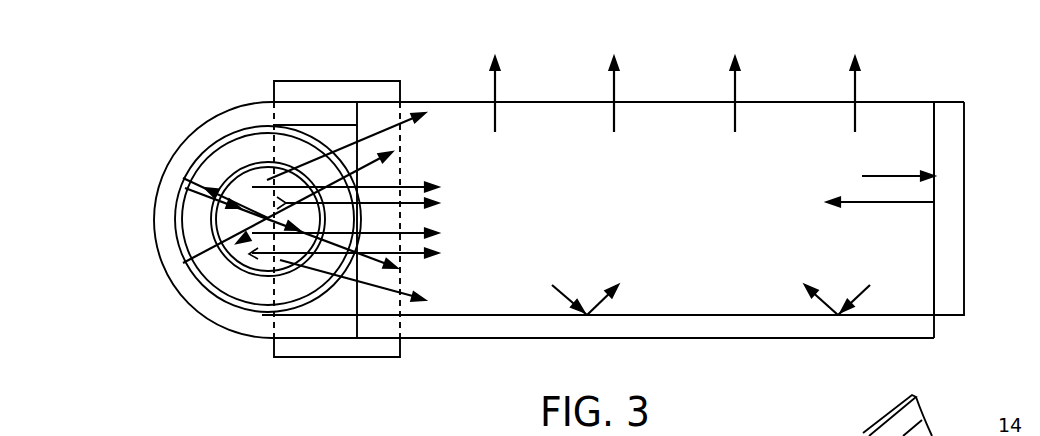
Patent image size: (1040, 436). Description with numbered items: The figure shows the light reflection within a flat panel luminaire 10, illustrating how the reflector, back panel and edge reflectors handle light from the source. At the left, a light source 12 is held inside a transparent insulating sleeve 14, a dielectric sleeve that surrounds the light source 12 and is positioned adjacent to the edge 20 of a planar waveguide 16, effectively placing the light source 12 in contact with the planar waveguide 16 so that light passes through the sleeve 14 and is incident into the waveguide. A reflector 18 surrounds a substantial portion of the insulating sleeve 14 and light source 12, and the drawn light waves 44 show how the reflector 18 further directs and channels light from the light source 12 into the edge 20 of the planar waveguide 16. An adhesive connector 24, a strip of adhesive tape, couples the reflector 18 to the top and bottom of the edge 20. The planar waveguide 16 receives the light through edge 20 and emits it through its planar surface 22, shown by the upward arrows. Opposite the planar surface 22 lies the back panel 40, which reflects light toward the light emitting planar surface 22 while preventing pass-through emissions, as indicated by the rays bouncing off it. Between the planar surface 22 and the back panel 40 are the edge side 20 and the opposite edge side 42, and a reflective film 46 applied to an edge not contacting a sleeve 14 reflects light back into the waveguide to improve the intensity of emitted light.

The flat panel luminaire 10 is at (222, 56).
The light source 12 is at (250, 250).
The transparent insulating sleeve 14 is at (195, 243).
The planar waveguide 16 is at (573, 194).
The reflector 18 is at (160, 222).
The edge 20 is at (353, 302).
The planar surface 22 is at (548, 100).
The adhesive connector 24 is at (350, 88).
The back panel 40 is at (658, 327).
The edge side 42 is at (919, 209).
The light waves 44 is at (370, 267).
The reflective film 46 is at (965, 246).